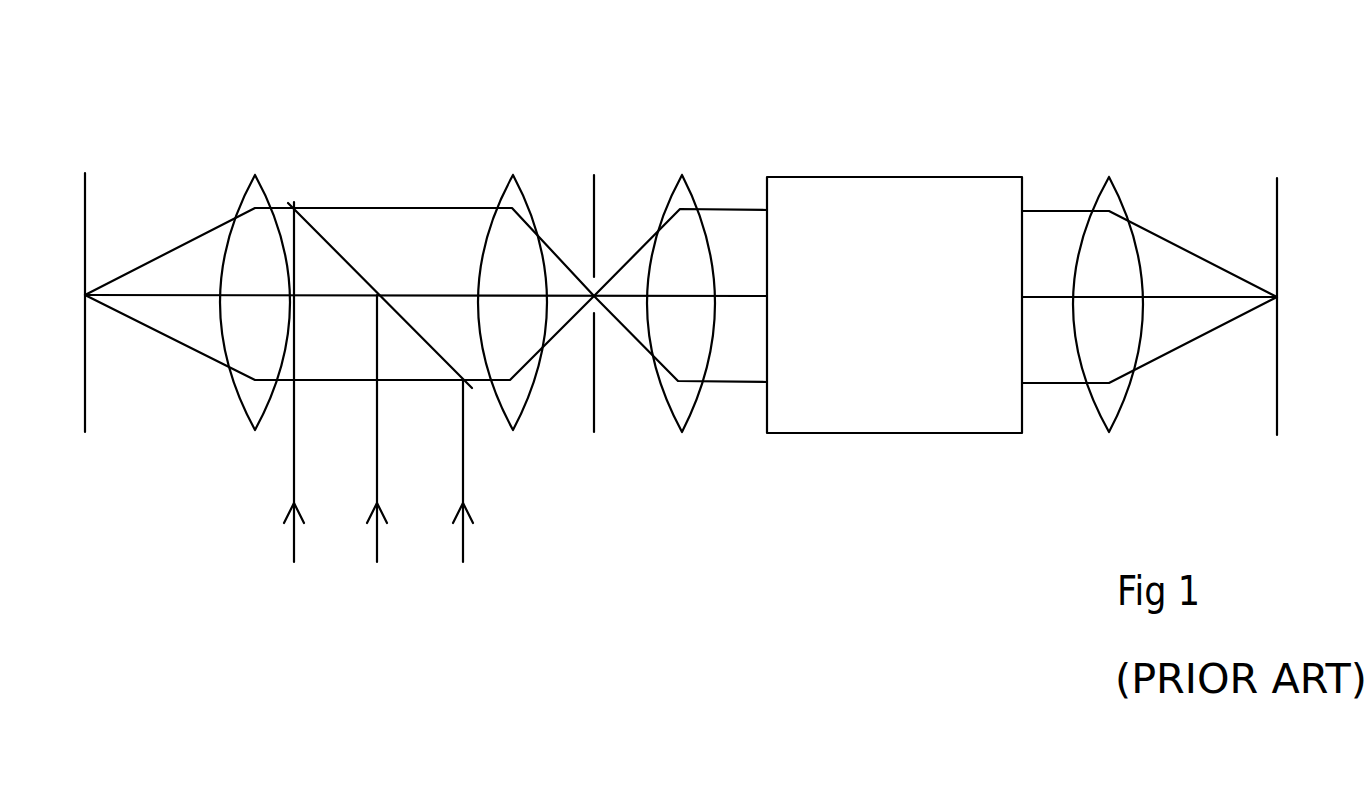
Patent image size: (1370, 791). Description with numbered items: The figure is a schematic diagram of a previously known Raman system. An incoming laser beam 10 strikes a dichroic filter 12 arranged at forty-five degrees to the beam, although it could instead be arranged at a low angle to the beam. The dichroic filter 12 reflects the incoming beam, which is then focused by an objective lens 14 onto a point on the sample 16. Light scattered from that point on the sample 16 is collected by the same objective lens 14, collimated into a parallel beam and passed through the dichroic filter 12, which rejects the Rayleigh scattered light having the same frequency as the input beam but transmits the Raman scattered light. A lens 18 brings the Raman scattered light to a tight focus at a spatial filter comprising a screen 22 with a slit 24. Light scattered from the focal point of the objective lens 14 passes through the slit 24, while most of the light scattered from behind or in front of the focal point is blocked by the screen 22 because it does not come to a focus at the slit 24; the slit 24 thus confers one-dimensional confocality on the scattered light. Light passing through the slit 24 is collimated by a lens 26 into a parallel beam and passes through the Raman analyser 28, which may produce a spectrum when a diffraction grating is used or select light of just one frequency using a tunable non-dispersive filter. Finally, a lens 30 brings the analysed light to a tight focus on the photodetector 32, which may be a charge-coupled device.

The incoming laser beam 10 is at (383, 543).
The dichroic filter 12 is at (352, 253).
The objective lens 14 is at (250, 193).
The sample 16 is at (80, 183).
The lens 18 is at (510, 193).
The screen 22 is at (592, 187).
The slit 24 is at (599, 313).
The lens 26 is at (680, 197).
The Raman analyser 28 is at (915, 182).
The lens 30 is at (1105, 190).
The photodetector 32 is at (1283, 187).